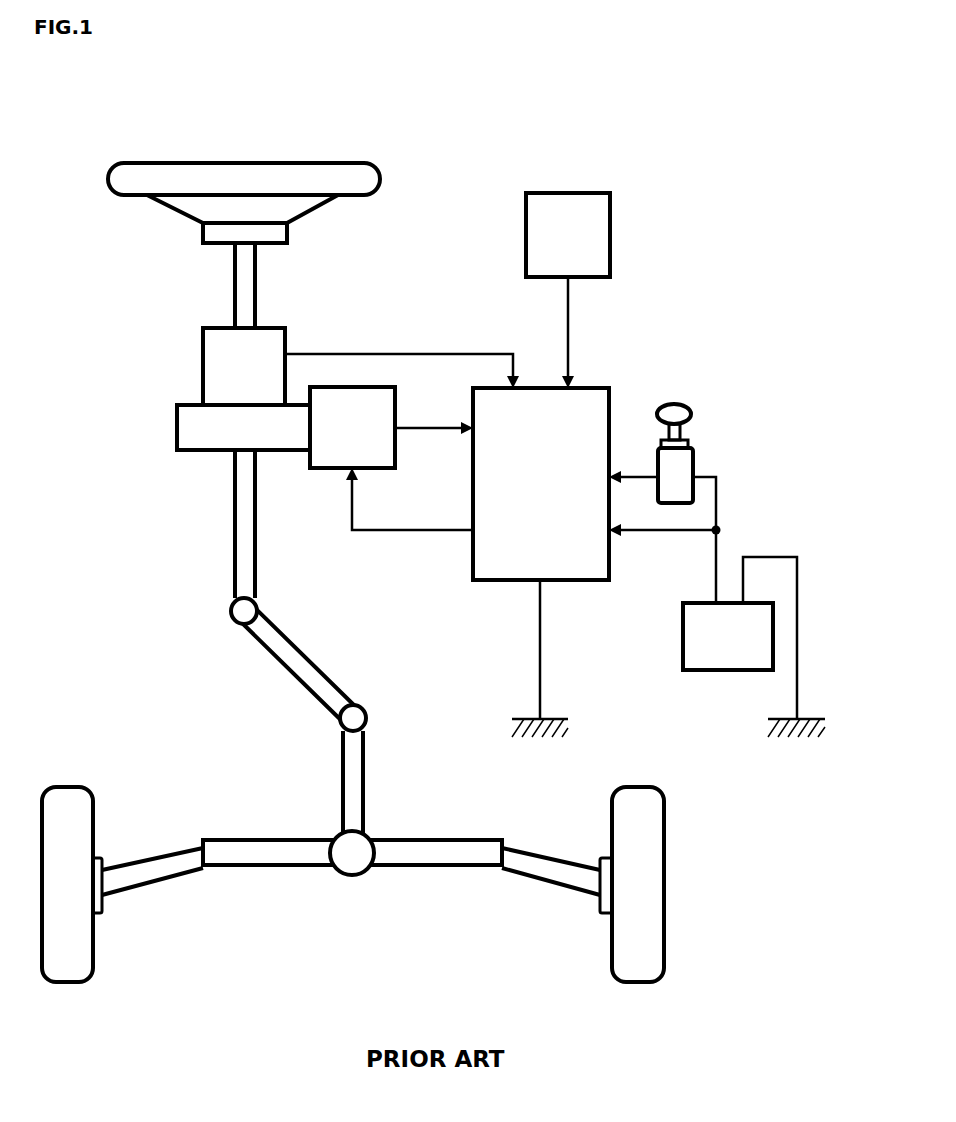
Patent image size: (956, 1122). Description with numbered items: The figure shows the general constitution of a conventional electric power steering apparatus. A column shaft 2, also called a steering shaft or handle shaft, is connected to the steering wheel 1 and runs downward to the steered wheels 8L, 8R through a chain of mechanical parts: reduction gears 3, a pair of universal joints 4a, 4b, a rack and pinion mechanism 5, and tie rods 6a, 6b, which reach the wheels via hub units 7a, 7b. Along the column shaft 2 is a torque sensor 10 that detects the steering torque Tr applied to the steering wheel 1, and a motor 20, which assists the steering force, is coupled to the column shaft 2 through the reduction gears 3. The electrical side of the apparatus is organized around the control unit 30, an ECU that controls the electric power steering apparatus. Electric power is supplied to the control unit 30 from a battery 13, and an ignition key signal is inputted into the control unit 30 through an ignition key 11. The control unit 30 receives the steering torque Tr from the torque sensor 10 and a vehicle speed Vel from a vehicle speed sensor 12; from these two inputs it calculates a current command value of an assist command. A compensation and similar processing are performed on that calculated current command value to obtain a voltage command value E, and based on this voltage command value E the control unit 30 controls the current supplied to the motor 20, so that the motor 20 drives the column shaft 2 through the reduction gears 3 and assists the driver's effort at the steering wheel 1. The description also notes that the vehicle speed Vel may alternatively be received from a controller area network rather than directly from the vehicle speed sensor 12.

The steering wheel 1 is at (381, 179).
The column shaft 2 is at (235, 288).
The reduction gears 3 is at (177, 436).
The universal joint 4a is at (231, 616).
The universal joint 4b is at (340, 722).
The rack and pinion mechanism 5 is at (366, 838).
The tie rod 6a is at (135, 860).
The tie rod 6b is at (532, 855).
The hub unit 7a is at (104, 905).
The hub unit 7b is at (599, 905).
The steered wheel 8L is at (93, 975).
The steered wheel 8R is at (612, 975).
The torque sensor 10 is at (203, 358).
The ignition key 11 is at (691, 414).
The vehicle speed sensor 12 is at (610, 207).
The battery 13 is at (683, 630).
The motor 20 is at (395, 398).
The control unit 30 is at (609, 393).
The steering torque Tr is at (420, 354).
The vehicle speed Vel is at (568, 318).
The voltage command value E is at (410, 531).